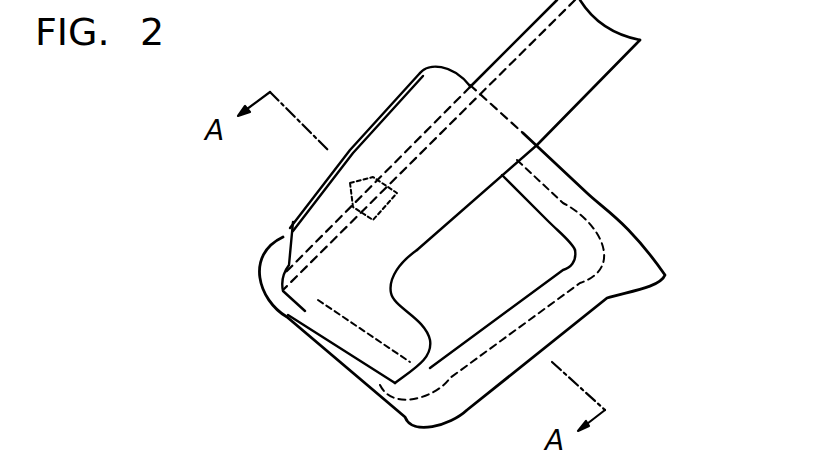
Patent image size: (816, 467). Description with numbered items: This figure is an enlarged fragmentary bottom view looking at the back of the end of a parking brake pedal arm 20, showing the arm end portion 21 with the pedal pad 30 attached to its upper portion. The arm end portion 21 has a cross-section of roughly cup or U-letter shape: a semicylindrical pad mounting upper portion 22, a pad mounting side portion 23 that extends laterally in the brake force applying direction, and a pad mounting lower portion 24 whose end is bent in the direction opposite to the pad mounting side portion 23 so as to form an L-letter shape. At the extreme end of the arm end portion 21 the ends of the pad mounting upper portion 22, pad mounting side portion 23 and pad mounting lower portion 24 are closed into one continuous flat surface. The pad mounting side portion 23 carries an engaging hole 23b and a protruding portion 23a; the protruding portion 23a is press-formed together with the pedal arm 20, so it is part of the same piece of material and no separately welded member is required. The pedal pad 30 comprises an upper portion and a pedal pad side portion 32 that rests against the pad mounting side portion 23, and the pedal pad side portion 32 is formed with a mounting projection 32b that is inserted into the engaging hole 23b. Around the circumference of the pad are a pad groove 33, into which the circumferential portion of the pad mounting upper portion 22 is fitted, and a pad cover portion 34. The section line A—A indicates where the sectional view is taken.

The pedal arm 20 is at (616, 77).
The arm end portion 21 is at (285, 318).
The pad mounting upper portion 22 is at (557, 212).
The pad mounting side portion 23 is at (427, 112).
The protruding portion 23a is at (390, 133).
The engaging hole 23b is at (357, 203).
The pad mounting lower portion 24 is at (335, 353).
The pedal pad 30 is at (650, 263).
The pedal pad side portion 32 is at (353, 140).
The mounting projection 32b is at (373, 203).
The pad groove 33 is at (577, 282).
The pad cover portion 34 is at (537, 312).